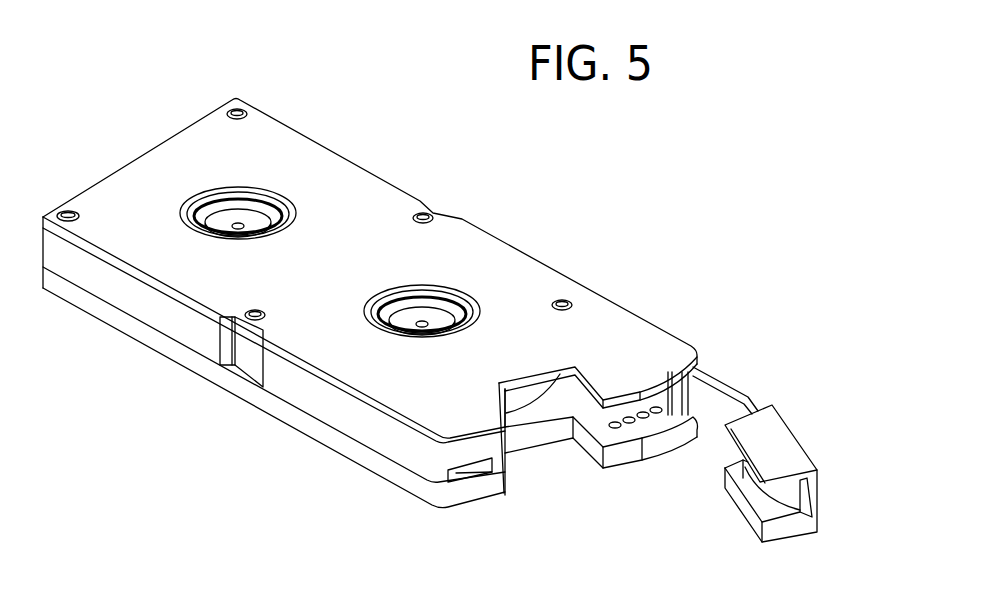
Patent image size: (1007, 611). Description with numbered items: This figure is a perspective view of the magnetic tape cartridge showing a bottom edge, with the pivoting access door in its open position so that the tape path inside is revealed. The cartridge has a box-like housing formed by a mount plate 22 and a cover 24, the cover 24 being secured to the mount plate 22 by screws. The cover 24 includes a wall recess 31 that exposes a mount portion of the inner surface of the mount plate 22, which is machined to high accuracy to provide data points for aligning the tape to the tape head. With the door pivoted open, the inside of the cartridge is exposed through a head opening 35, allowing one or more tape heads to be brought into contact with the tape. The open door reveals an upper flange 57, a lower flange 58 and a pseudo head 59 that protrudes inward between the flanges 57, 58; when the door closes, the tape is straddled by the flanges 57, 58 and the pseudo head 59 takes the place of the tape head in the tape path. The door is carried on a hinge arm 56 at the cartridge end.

The mount plate 22 is at (120, 318).
The cover 24 is at (385, 192).
The wall recess 31 is at (465, 474).
The head opening 35 is at (557, 472).
The hinge arm 56 is at (717, 378).
The upper flange 57 is at (778, 440).
The lower flange 58 is at (788, 532).
The pseudo head 59 is at (755, 505).